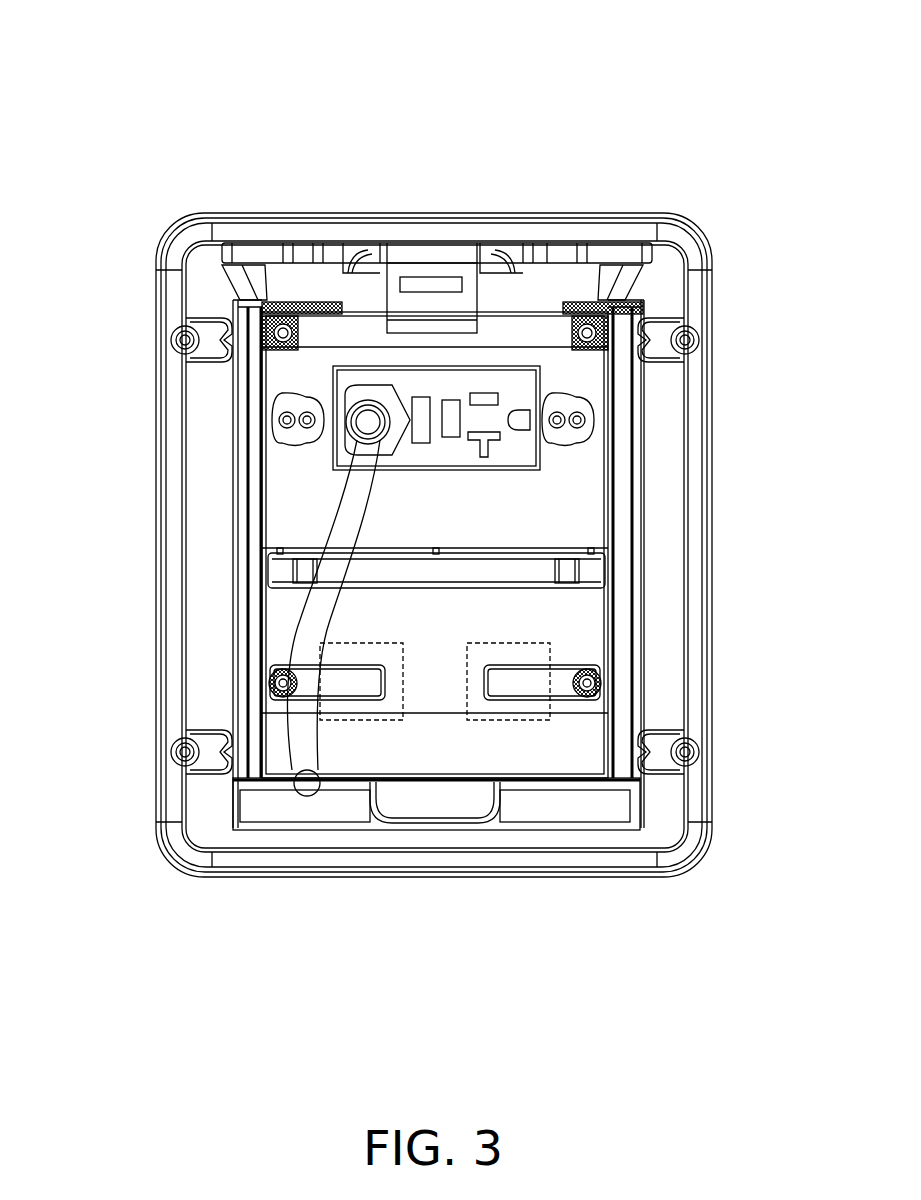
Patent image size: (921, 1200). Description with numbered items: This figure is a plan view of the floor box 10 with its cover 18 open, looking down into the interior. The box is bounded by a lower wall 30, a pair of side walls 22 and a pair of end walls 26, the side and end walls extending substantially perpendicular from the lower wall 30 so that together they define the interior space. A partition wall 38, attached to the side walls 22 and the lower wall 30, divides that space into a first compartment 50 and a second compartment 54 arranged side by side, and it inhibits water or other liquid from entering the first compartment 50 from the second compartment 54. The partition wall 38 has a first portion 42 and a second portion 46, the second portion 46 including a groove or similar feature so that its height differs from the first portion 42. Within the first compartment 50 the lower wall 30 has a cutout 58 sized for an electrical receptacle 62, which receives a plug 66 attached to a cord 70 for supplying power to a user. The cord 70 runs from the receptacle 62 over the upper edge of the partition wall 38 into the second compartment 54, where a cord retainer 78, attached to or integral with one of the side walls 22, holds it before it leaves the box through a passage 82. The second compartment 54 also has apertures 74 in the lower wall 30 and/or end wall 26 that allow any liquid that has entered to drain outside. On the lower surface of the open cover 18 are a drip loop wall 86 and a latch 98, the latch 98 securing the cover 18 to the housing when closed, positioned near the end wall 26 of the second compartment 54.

The floor box 10 is at (93, 88).
The cover 18 is at (640, 256).
The side walls 22 is at (252, 465).
The end walls 26 is at (533, 780).
The lower wall 30 is at (573, 500).
The partition wall 38 is at (472, 590).
The first portion 42 is at (280, 572).
The second portion 46 is at (438, 573).
The first compartment 50 is at (585, 393).
The second compartment 54 is at (583, 748).
The cutout 58 is at (437, 472).
The receptacle 62 is at (513, 380).
The plug 66 is at (347, 392).
The cord 70 is at (355, 517).
The apertures 74 is at (378, 720).
The cord retainer 78 is at (500, 687).
The passage 82 is at (300, 256).
The drip loop wall 86 is at (302, 311).
The latch 98 is at (463, 306).